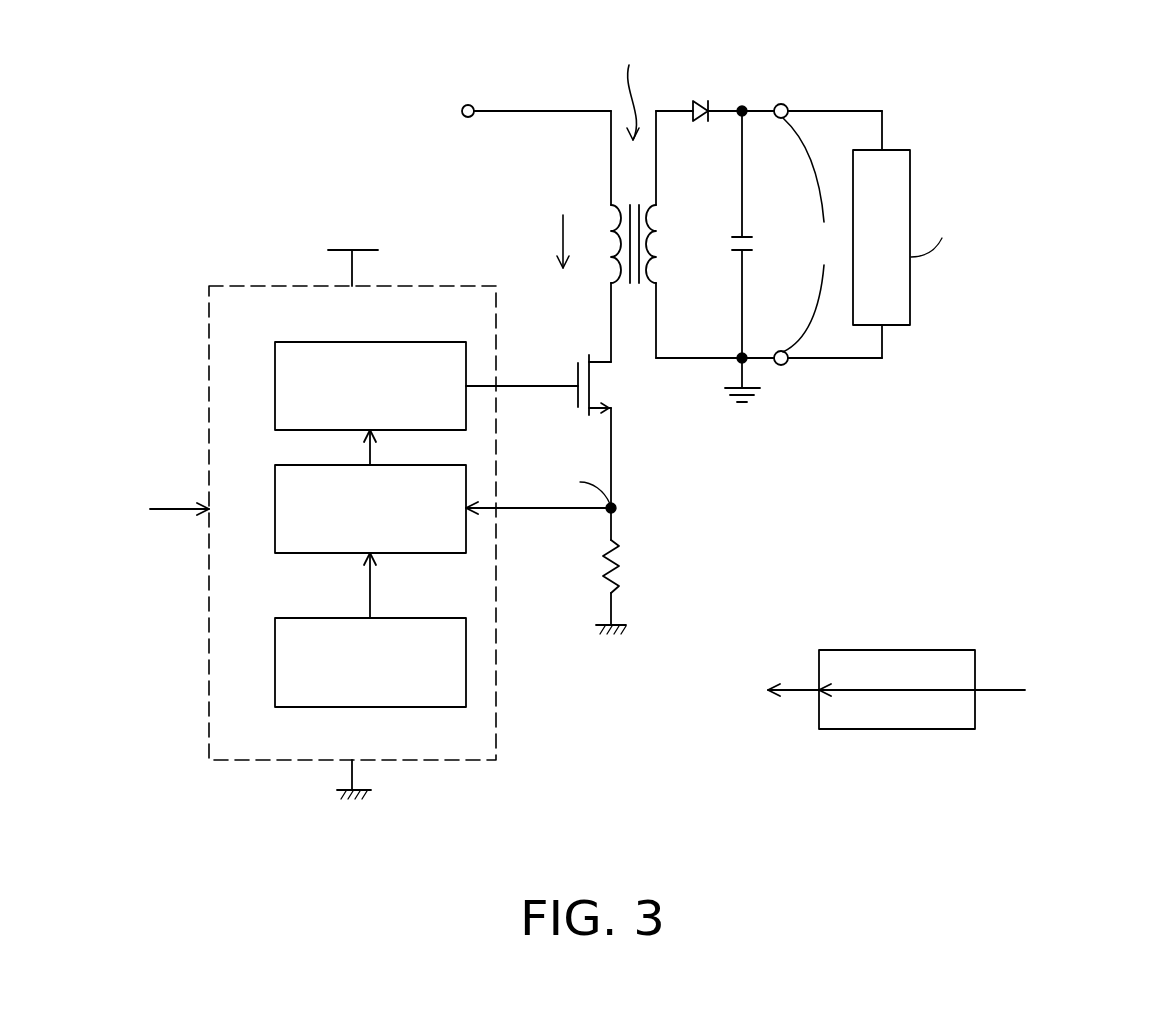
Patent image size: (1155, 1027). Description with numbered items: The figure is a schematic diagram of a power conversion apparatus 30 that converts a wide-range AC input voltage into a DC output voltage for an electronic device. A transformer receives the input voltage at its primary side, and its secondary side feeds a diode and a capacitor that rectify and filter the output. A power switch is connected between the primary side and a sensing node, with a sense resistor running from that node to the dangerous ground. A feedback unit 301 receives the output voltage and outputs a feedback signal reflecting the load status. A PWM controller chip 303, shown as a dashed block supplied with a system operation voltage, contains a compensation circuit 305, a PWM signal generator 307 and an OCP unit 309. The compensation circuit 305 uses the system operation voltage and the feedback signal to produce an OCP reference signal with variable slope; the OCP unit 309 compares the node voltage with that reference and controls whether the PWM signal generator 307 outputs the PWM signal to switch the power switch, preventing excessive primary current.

The power conversion apparatus 30 is at (1135, 860).
The feedback unit 301 is at (898, 650).
The PWM controller chip 303 is at (325, 285).
The compensation circuit 305 is at (325, 707).
The PWM signal generator 307 is at (325, 342).
The OCP unit 309 is at (325, 553).